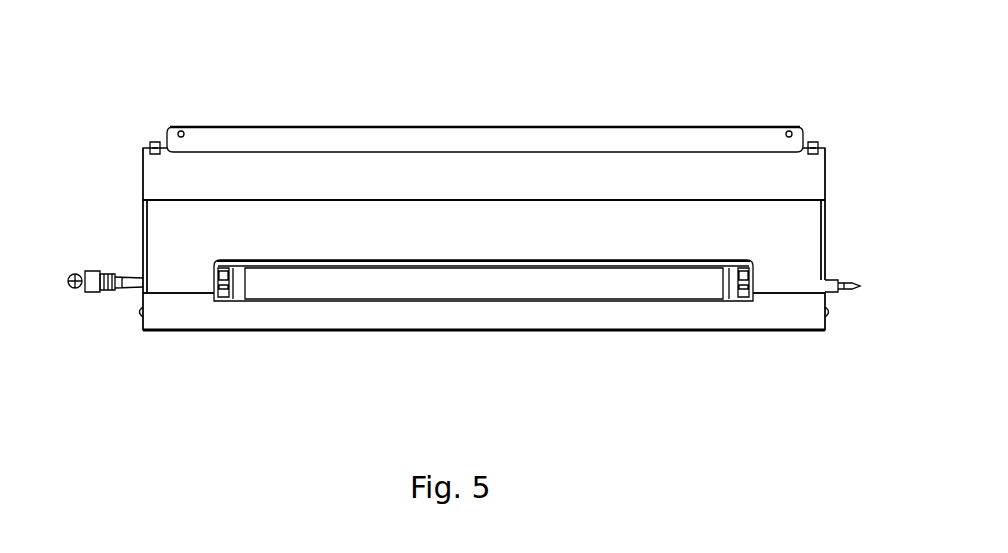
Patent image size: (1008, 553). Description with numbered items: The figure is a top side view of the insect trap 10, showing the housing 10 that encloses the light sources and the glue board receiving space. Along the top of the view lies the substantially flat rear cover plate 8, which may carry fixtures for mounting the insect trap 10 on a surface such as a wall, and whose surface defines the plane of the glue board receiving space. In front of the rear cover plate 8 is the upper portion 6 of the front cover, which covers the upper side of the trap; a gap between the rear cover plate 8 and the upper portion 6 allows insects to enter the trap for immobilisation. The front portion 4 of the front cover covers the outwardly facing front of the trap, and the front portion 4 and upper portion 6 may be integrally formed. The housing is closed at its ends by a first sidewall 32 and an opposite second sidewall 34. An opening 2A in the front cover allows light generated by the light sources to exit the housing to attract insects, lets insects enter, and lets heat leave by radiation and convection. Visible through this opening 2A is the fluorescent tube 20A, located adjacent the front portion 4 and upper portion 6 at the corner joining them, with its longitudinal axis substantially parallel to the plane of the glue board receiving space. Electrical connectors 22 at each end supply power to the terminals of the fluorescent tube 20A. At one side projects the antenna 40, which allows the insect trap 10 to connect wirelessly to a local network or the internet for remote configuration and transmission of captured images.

The insect trap 10 is at (712, 96).
The rear cover plate 8 is at (472, 126).
The upper portion 6 is at (792, 224).
The second sidewall 34 is at (136, 222).
The first sidewall 32 is at (835, 239).
The antenna 40 is at (75, 292).
The front portion 4 is at (388, 336).
The opening 2A is at (523, 314).
The fluorescent tube 20A is at (598, 287).
The electrical connectors 22 is at (228, 306).